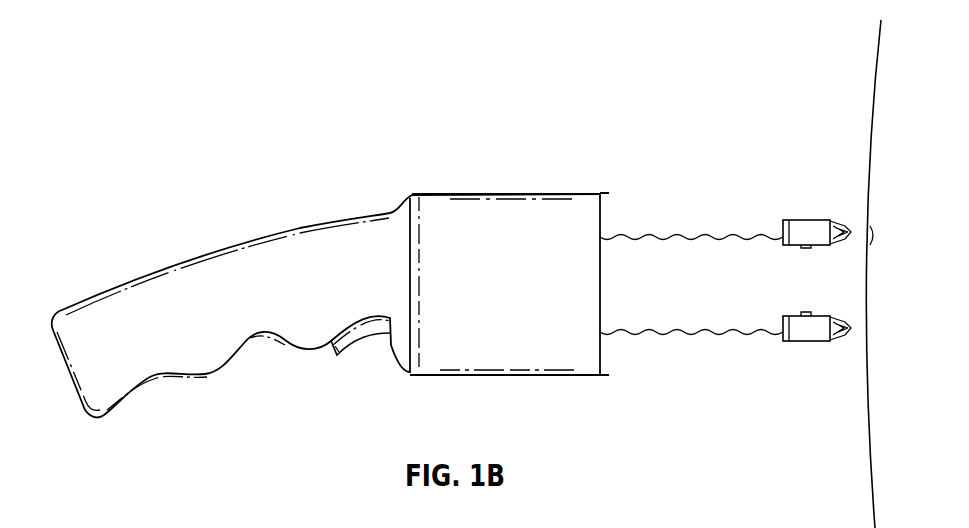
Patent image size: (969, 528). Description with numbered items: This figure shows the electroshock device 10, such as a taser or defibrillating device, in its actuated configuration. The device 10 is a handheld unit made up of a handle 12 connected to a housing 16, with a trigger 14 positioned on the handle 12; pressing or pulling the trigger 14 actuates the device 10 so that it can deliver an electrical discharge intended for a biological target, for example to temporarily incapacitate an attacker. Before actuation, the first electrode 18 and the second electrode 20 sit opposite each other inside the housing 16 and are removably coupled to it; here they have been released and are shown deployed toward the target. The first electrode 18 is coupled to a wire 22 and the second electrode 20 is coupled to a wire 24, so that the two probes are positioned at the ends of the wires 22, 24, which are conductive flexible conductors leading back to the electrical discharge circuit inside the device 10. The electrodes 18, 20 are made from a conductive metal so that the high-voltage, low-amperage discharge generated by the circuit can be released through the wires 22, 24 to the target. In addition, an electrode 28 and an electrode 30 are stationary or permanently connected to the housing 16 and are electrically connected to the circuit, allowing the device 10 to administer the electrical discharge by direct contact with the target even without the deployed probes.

The electroshock device 10 is at (112, 214).
The handle 12 is at (326, 305).
The trigger 14 is at (337, 354).
The housing 16 is at (517, 192).
The first electrode 18 is at (800, 220).
The second electrode 20 is at (797, 342).
The wire 22 is at (710, 233).
The wire 24 is at (710, 334).
The electrode 28 is at (605, 193).
The electrode 30 is at (606, 378).